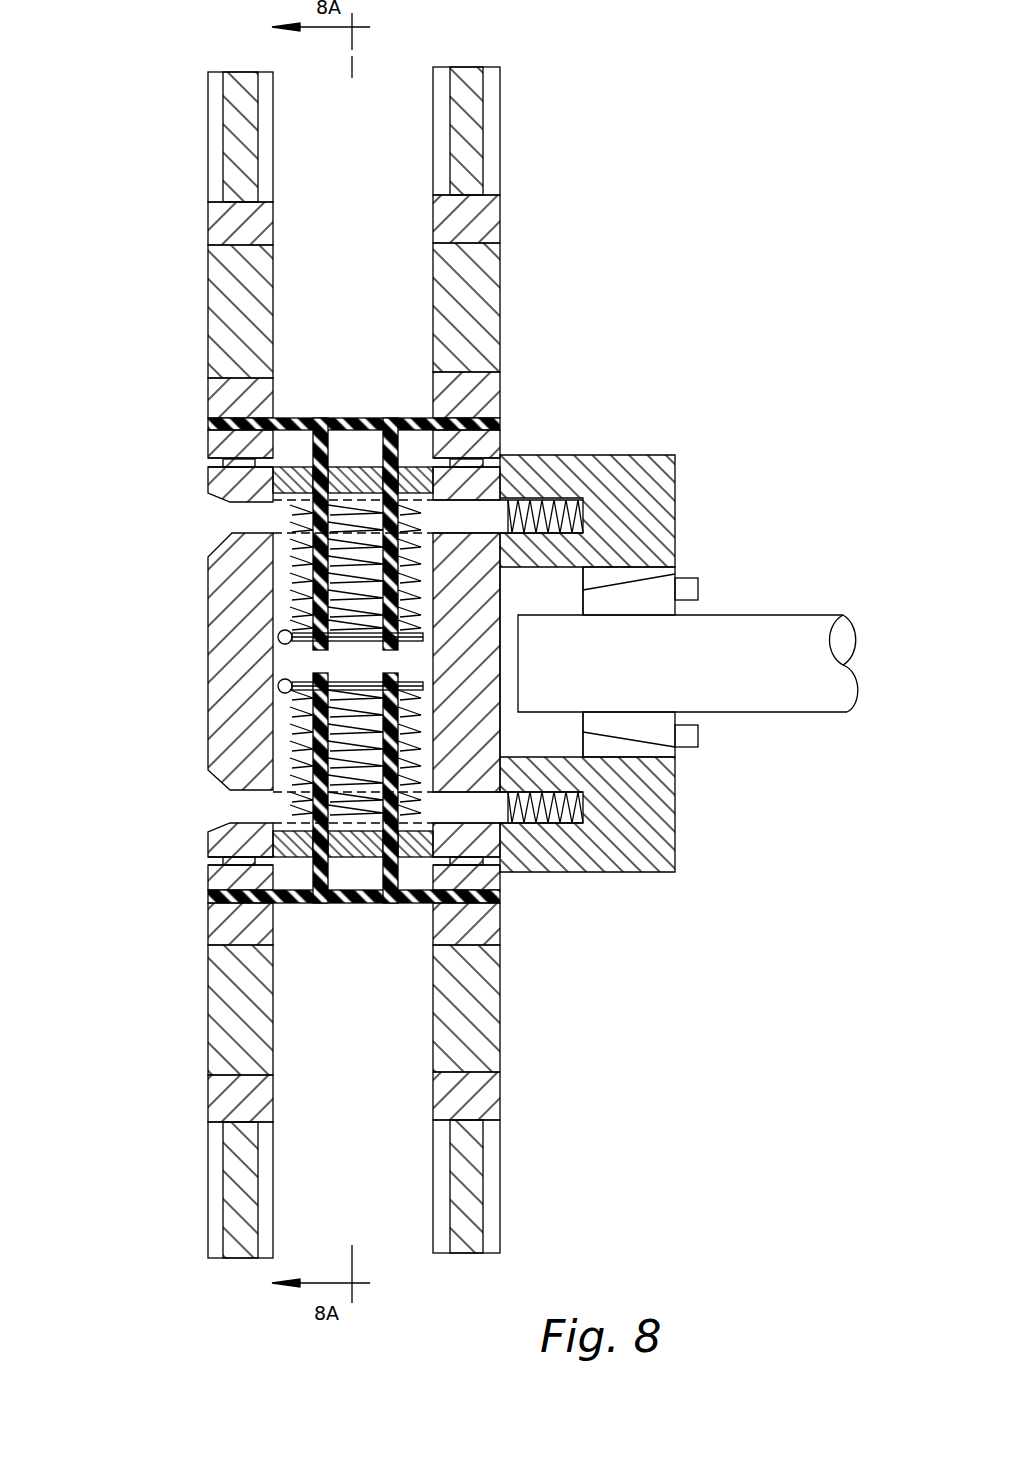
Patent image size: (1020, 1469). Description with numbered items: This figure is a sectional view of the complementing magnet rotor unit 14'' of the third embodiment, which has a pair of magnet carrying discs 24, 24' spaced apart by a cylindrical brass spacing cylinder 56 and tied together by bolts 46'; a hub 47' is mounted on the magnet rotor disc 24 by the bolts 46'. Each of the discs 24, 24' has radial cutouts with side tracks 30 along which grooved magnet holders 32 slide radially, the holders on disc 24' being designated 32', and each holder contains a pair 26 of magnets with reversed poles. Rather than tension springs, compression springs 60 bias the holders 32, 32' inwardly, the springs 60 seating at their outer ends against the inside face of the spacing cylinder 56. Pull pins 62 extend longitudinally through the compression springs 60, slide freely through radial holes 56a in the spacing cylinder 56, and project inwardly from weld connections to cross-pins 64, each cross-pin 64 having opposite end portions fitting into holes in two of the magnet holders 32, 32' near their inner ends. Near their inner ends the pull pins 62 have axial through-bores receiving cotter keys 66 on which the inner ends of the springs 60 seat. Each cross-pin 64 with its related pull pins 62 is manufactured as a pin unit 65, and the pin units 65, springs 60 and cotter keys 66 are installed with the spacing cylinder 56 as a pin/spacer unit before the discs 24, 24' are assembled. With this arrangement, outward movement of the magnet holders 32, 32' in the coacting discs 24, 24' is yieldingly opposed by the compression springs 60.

The magnet rotor unit 14'' is at (282, 242).
The magnet rotor disc 24 is at (645, 662).
The magnet rotor disc 24' is at (200, 661).
The pairs of magnets 26 is at (217, 1012).
The side tracks 30 is at (460, 1242).
The magnet holders 32 is at (502, 1092).
The magnet holders 32' is at (202, 1098).
The bolts 46' is at (540, 619).
The hub 47' is at (599, 633).
The spacing cylinder 56 is at (363, 858).
The radial holes 56a is at (362, 470).
The compression springs 60 is at (307, 527).
The pull pins 62 is at (307, 607).
The cross-pins 64 is at (376, 420).
The pin unit 65 is at (318, 432).
The cotter keys 66 is at (298, 643).